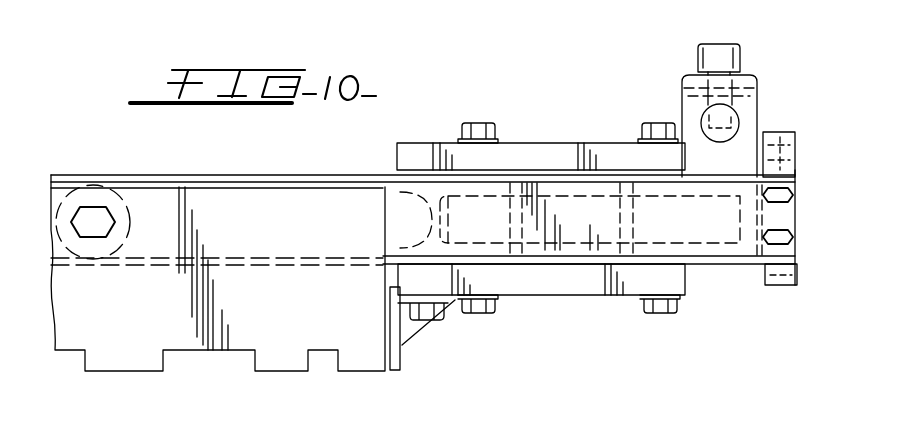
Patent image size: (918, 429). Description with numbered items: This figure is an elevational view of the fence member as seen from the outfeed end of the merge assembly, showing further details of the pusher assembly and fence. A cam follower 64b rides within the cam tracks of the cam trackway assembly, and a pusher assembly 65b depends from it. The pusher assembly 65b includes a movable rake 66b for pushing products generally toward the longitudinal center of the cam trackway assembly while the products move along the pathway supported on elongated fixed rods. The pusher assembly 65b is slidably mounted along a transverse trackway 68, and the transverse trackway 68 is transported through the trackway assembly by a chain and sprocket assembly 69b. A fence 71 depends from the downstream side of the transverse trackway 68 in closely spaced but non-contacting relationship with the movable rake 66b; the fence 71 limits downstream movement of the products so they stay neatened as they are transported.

The cam follower 64b is at (700, 55).
The pusher assembly 65b is at (572, 160).
The movable rake 66b is at (402, 356).
The transverse trackway 68 is at (727, 256).
The chain and sprocket assembly 69b is at (776, 140).
The fence 71 is at (322, 304).